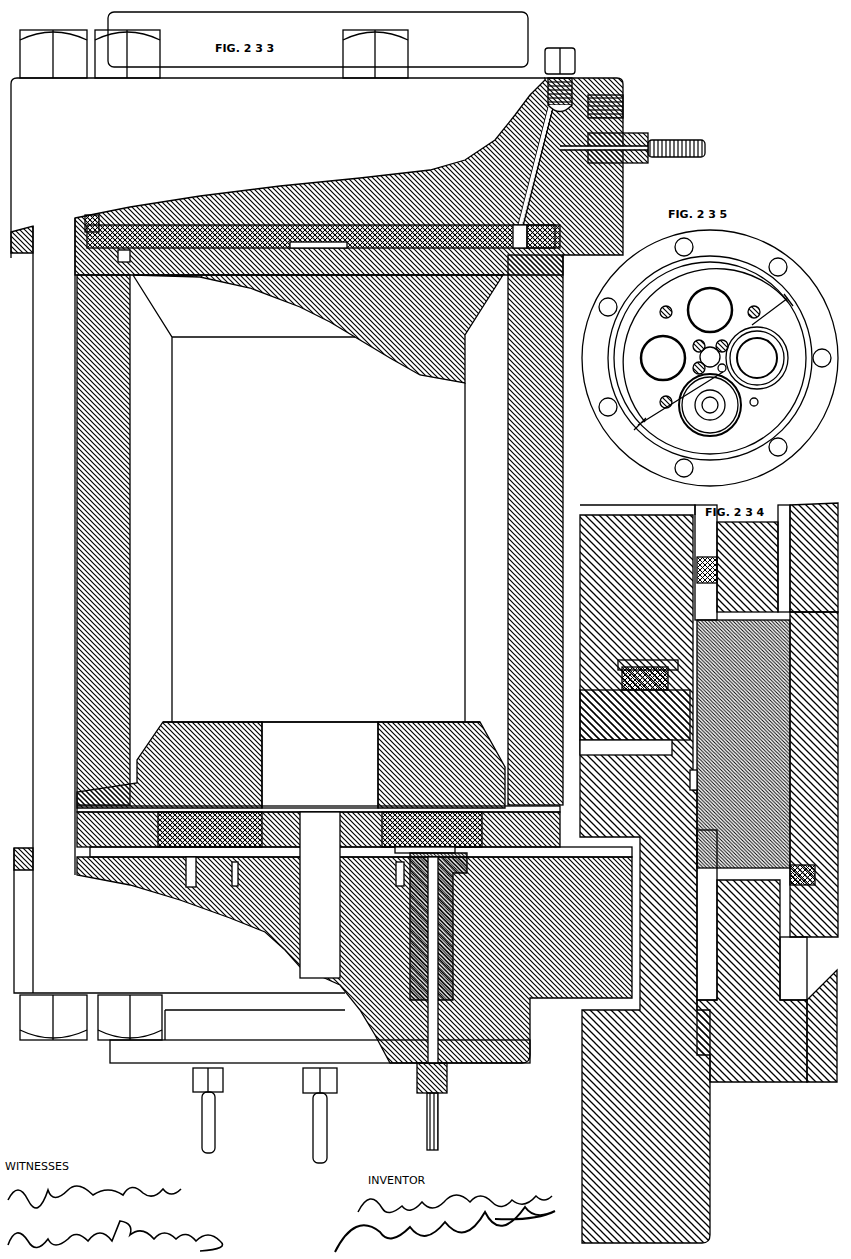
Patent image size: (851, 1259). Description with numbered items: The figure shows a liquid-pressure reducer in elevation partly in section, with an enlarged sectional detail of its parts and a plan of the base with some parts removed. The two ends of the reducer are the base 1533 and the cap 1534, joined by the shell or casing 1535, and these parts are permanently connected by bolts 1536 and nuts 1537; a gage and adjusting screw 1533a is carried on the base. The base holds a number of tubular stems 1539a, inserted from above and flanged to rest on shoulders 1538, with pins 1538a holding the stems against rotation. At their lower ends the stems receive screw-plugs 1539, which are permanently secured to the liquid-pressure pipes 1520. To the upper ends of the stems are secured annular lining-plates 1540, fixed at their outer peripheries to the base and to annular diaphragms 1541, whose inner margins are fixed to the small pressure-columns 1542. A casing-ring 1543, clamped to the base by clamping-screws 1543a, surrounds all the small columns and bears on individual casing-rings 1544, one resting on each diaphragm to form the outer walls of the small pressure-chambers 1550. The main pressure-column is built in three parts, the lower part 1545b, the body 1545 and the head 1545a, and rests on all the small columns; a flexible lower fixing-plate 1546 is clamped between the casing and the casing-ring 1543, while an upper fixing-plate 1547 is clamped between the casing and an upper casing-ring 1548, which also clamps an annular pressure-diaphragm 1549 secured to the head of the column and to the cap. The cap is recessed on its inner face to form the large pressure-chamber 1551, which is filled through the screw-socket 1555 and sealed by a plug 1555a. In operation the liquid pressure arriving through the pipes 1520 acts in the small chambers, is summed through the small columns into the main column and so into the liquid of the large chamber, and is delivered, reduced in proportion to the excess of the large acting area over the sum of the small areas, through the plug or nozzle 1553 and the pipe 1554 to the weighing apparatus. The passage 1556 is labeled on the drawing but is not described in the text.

In FIG. 233, the liquid-pressure pipes 1520 is at (319, 1122).
In FIG. 233, the base 1533 is at (323, 955).
In FIG. 235, the base 1533 is at (710, 358).
In FIG. 234, the base 1533 is at (645, 874).
In FIG. 233, the gage and adjusting screw 1533a is at (367, 987).
In FIG. 233, the cap 1534 is at (317, 197).
In FIG. 233, the shell or casing 1535 is at (320, 530).
In FIG. 234, the shell or casing 1535 is at (820, 1026).
In FIG. 233, the bolts 1536 is at (54, 605).
In FIG. 233, the nuts 1537 is at (214, 54).
In FIG. 234, the shoulders 1538 is at (645, 736).
In FIG. 233, the pins 1538a is at (318, 874).
In FIG. 233, the screw-plugs 1539 is at (447, 1003).
In FIG. 233, the tubular stems 1539a is at (318, 890).
In FIG. 234, the tubular stems 1539a is at (635, 722).
In FIG. 234, the annular lining-plates 1540 is at (692, 915).
In FIG. 234, the annular diaphragms 1541 is at (704, 562).
In FIG. 233, the small pressure-columns 1542 is at (320, 829).
In FIG. 235, the small pressure-columns 1542 is at (709, 334).
In FIG. 234, the small pressure-columns 1542 is at (743, 744).
In FIG. 233, the casing-ring 1543 is at (318, 829).
In FIG. 235, the casing-ring 1543 is at (718, 357).
In FIG. 234, the casing-ring 1543 is at (752, 793).
In FIG. 235, the clamping-screws 1543a is at (704, 357).
In FIG. 235, the individual casing-rings 1544 is at (776, 345).
In FIG. 234, the individual casing-rings 1544 is at (707, 570).
In FIG. 233, the main pressure-column 1545 is at (306, 541).
In FIG. 234, the main pressure-column 1545 is at (814, 557).
In FIG. 233, the head of the main pressure-column 1545a is at (318, 516).
In FIG. 234, the lower part of the main pressure-column 1545b is at (814, 774).
In FIG. 233, the lower fixing-plate 1546 is at (354, 829).
In FIG. 234, the lower fixing-plate 1546 is at (791, 968).
In FIG. 233, the upper fixing-plate 1547 is at (124, 254).
In FIG. 233, the casing-ring 1548 is at (541, 236).
In FIG. 233, the annular pressure-diaphragm 1549 is at (106, 223).
In FIG. 233, the small pressure-chambers 1550 is at (425, 848).
In FIG. 234, the small pressure-chambers 1550 is at (686, 779).
In FIG. 233, the large pressure-chamber 1551 is at (315, 232).
In FIG. 233, the plug 1553 is at (606, 155).
In FIG. 233, the pipe 1554 is at (676, 155).
In FIG. 233, the screw-socket 1555 is at (623, 120).
In FIG. 233, the plug 1555a is at (558, 72).
In FIG. 233, the passage 1556 is at (535, 167).